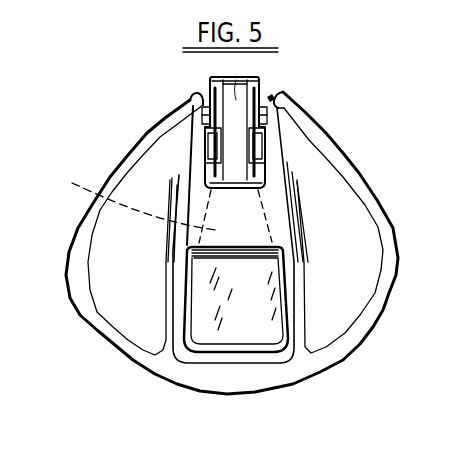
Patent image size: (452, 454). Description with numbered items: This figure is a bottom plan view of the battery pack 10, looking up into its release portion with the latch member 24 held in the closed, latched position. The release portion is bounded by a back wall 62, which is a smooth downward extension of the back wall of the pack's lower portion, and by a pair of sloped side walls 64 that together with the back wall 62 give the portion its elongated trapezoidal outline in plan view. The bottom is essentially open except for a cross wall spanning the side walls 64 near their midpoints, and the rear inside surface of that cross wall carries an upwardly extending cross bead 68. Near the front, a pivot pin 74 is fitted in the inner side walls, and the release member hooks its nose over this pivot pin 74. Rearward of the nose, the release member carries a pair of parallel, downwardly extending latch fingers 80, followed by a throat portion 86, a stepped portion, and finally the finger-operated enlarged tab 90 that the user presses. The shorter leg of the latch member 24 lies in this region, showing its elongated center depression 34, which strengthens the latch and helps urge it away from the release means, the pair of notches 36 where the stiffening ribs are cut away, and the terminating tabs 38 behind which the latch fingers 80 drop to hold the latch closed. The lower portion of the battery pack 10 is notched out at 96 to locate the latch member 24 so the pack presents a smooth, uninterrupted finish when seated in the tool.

The battery pack 10 is at (330, 110).
The latch member 24 is at (235, 100).
The elongated center depression 34 is at (232, 108).
The notches 36 is at (204, 133).
The tabs 38 is at (208, 177).
The back wall 62 is at (278, 362).
The side walls 64 is at (182, 283).
The cross bead 68 is at (247, 217).
The pivot pin 74 is at (277, 108).
The latch fingers 80 is at (214, 158).
The throat portion 86 is at (127, 198).
The enlarged tab 90 is at (214, 334).
The notch 96 is at (270, 92).